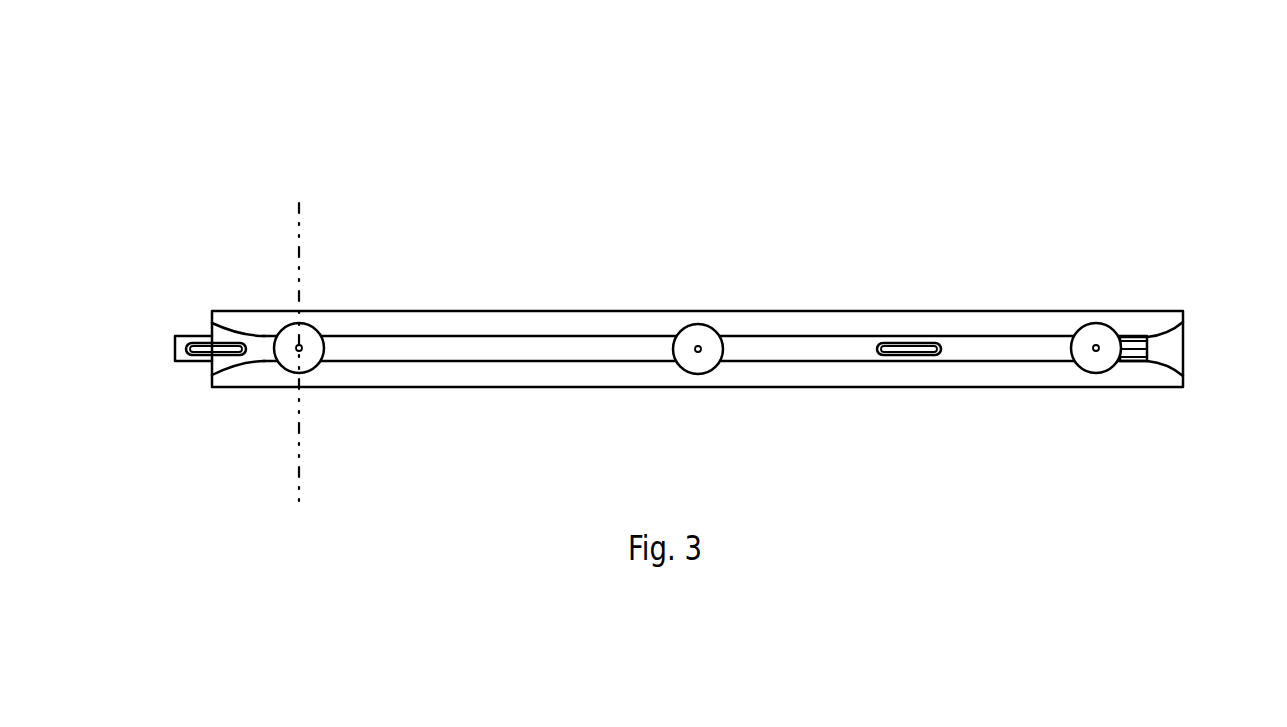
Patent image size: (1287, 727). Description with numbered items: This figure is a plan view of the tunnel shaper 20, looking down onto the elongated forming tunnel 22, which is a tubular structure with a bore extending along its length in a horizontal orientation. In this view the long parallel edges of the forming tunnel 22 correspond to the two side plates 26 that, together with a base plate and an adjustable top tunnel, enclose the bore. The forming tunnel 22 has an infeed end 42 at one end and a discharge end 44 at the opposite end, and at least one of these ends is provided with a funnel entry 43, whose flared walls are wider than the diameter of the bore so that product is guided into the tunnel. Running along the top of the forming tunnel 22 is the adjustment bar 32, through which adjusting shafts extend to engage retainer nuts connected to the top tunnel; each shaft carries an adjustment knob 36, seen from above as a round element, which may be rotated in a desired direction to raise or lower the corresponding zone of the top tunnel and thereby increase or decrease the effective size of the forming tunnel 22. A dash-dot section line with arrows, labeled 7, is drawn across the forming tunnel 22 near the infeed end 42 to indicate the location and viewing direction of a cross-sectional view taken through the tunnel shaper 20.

The tunnel shaper 20 is at (490, 167).
The forming tunnel 22 is at (1148, 348).
The side plates 26 is at (910, 372).
The adjustment bar 32 is at (403, 353).
The adjustment knob 36 is at (698, 370).
The infeed end 42 is at (1183, 319).
The funnel entry 43 is at (1172, 362).
The discharge end 44 is at (212, 383).
The section line 7- 7 is at (393, 203).